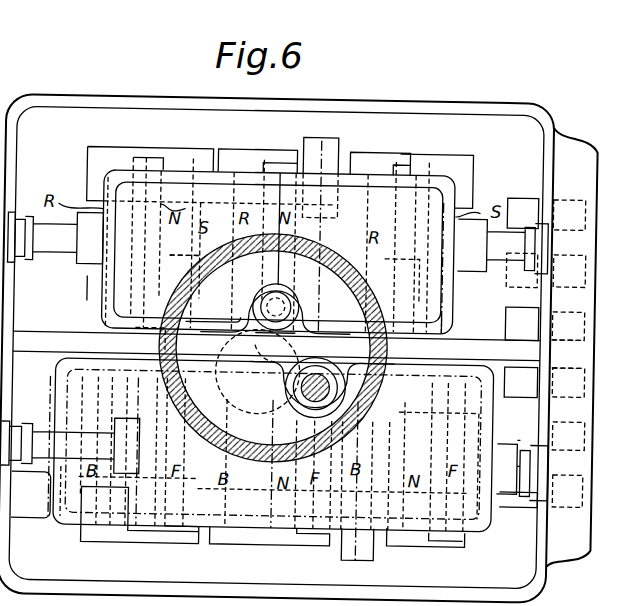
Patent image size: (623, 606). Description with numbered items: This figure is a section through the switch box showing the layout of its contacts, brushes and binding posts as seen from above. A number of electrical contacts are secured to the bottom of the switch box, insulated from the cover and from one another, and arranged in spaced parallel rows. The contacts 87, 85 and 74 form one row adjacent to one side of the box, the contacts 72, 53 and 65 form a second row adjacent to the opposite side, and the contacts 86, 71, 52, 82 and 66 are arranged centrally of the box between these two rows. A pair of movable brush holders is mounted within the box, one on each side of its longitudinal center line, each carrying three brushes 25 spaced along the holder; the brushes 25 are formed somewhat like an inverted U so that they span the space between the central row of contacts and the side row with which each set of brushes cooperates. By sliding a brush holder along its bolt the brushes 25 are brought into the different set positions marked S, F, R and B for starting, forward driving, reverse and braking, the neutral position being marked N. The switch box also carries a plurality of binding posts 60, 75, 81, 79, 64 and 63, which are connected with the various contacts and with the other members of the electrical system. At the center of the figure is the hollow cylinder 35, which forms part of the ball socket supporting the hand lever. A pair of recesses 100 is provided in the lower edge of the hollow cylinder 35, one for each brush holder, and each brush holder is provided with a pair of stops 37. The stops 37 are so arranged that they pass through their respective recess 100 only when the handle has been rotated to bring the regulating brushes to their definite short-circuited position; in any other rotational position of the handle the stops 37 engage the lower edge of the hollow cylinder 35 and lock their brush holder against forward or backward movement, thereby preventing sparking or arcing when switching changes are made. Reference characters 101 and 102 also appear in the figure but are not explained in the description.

The electrical contact 87 is at (111, 166).
The electrical contact 85 is at (240, 164).
The electrical contact 74 is at (459, 165).
The hollow cylinder 35 is at (323, 257).
The brushes 25 is at (469, 552).
The binding post 60 is at (569, 215).
The binding post 75 is at (569, 271).
The electrical contact 86 is at (89, 289).
The recess 100 is at (141, 326).
The electrical contact 71 is at (251, 314).
The electrical contact 52 is at (268, 308).
The electrical contact 82 is at (455, 326).
The binding post 81 is at (545, 324).
The terminal 101 is at (568, 354).
The binding post 79 is at (544, 382).
The binding post 64 is at (568, 436).
The binding post 63 is at (567, 491).
The eccentric 102 is at (250, 372).
The stops 37 is at (389, 380).
The electrical contact 66 is at (438, 464).
The electrical contact 72 is at (122, 534).
The electrical contact 53 is at (250, 540).
The electrical contact 65 is at (417, 539).